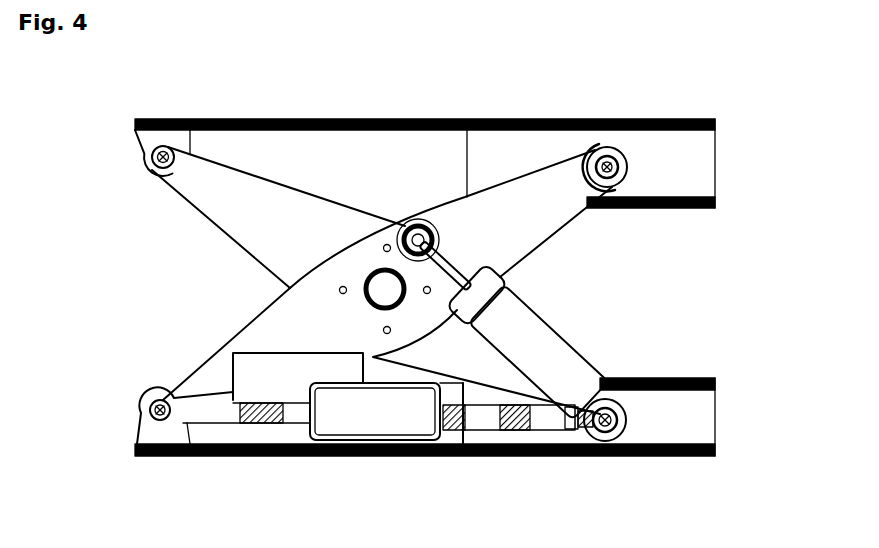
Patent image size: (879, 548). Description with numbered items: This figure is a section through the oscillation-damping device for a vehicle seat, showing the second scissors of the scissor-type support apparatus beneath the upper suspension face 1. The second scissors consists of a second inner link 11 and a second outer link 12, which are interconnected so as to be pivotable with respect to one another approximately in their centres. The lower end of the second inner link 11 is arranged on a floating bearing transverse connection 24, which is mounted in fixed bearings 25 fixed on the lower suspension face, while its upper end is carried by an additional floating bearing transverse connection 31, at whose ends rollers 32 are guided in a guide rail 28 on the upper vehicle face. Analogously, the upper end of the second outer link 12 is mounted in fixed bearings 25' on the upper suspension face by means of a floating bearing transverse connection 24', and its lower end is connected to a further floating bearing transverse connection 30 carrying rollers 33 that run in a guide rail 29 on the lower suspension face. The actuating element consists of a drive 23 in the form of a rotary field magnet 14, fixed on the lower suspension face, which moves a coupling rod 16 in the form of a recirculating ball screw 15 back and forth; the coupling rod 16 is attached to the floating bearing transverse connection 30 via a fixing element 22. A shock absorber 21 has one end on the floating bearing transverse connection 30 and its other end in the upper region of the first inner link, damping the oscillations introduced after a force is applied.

The upper suspension face 1 is at (417, 120).
The second inner link 11 is at (523, 232).
The second outer link 12 is at (310, 207).
The rotary field magnet 14 is at (360, 417).
The recirculating ball screw 15 is at (416, 468).
The coupling rod 16 is at (515, 417).
The shock absorber 21 is at (548, 338).
The fixing element 22 is at (590, 463).
The drive 23 is at (348, 442).
The floating bearing transverse connection 24 is at (131, 374).
The floating bearing transverse connection 24' is at (113, 173).
The fixed bearings 25 is at (180, 436).
The fixed bearings 25' is at (169, 114).
The guide rail 28 is at (667, 187).
The guide rail 29 is at (683, 377).
The floating bearing transverse connection 30 is at (633, 373).
The additional floating bearing transverse connection 31 is at (627, 170).
The rollers 32 is at (627, 123).
The rollers 33 is at (640, 412).